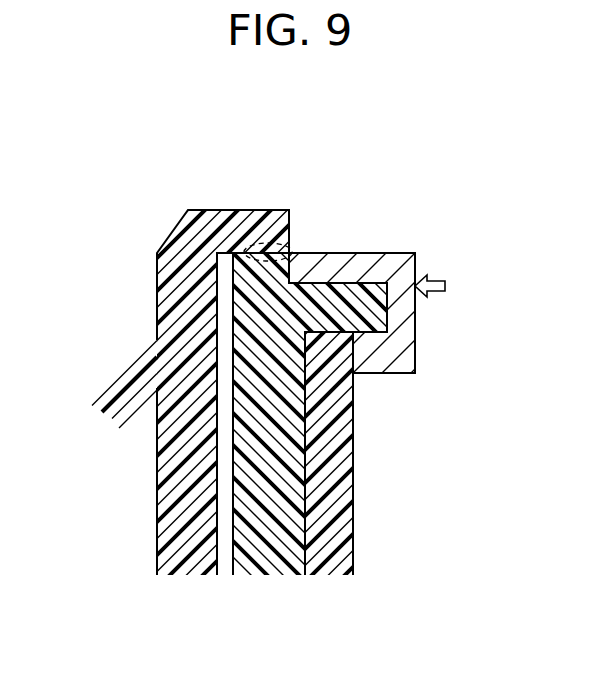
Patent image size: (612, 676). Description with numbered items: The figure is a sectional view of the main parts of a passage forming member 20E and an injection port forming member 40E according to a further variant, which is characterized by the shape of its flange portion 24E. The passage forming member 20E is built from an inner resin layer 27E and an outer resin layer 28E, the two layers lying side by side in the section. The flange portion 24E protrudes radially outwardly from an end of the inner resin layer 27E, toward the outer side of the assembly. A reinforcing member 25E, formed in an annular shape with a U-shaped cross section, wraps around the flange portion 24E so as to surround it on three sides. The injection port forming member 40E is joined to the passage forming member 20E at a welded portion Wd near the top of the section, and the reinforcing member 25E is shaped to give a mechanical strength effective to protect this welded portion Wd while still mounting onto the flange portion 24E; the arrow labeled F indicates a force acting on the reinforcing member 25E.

The injection port forming member 40E is at (157, 272).
The flange portion 24E is at (368, 283).
The reinforcing member 25E is at (415, 307).
The inner resin layer 27E is at (303, 477).
The outer resin layer 28E is at (353, 411).
The passage forming member 20E is at (306, 413).
The welded portion Wd is at (265, 245).
The force F is at (435, 278).